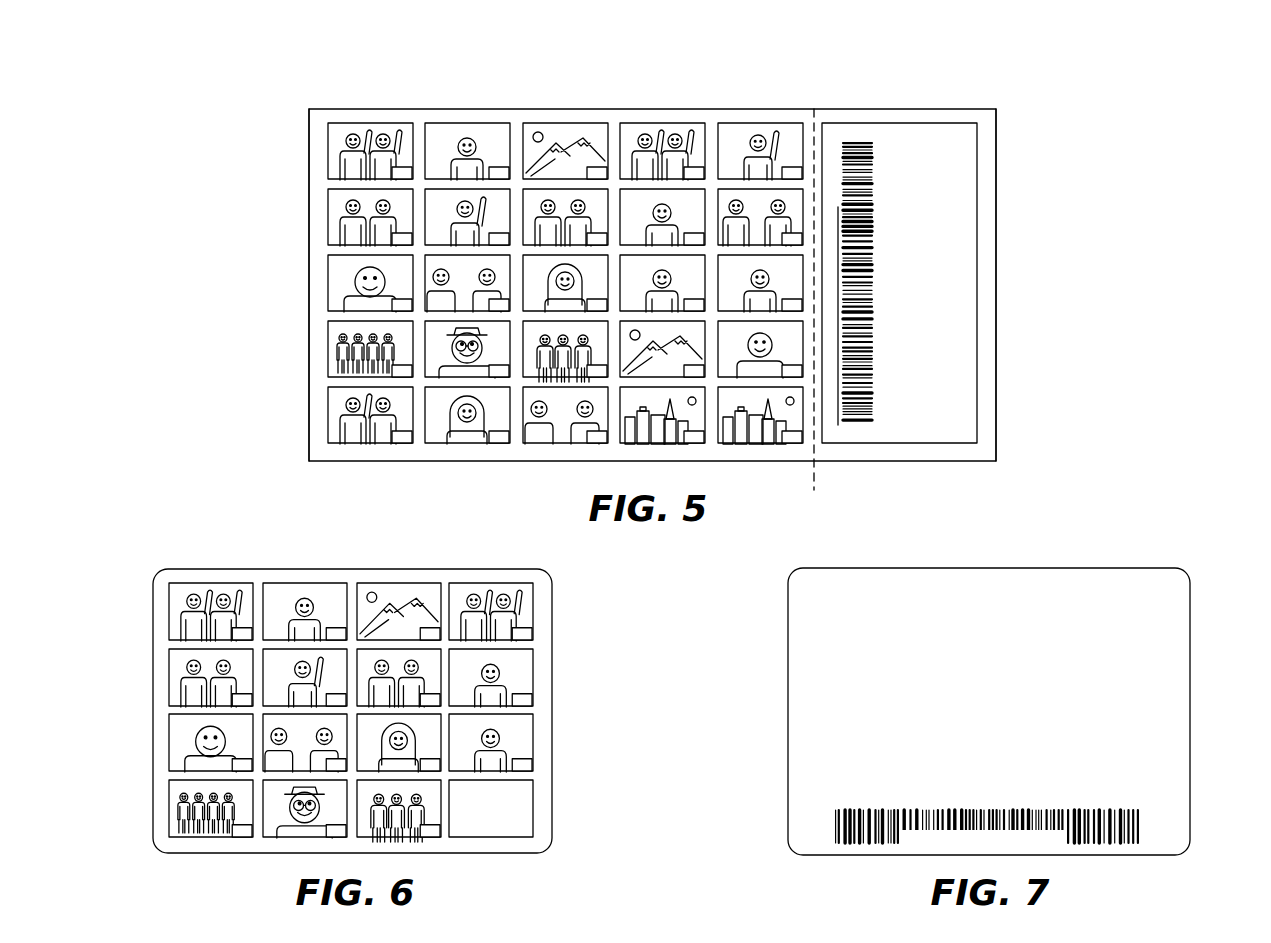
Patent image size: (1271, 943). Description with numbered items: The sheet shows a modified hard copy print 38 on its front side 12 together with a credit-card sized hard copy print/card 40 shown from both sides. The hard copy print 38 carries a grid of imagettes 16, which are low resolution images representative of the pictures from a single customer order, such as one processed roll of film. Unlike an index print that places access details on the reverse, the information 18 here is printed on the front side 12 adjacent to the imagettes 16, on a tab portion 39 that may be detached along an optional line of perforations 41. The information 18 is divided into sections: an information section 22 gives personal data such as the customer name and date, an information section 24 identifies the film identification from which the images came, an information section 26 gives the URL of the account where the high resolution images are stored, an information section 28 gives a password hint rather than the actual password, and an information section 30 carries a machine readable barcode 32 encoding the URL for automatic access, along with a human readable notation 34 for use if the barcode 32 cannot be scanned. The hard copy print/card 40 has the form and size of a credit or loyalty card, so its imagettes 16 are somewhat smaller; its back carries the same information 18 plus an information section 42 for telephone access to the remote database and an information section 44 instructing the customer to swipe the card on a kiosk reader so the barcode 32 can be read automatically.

In FIG. 5, the front side 12 is at (985, 128).
In FIG. 5, the imagettes 16 is at (630, 137).
In FIG. 5, the information 18 is at (966, 383).
In FIG. 5, the information section 22 is at (933, 103).
In FIG. 5, the information section 24 is at (923, 140).
In FIG. 5, the information section 26 is at (898, 140).
In FIG. 5, the information section 28 is at (878, 140).
In FIG. 5, the information section 30 is at (851, 432).
In FIG. 5, the machine readable barcode 32 is at (860, 430).
In FIG. 5, the human readable notation 34 is at (840, 206).
In FIG. 5, the hard copy print 38 is at (307, 436).
In FIG. 5, the tab portion 39 is at (985, 231).
In FIG. 6, the hard copy print/card 40 is at (556, 645).
In FIG. 7, the hard copy print/card 40 is at (1195, 648).
In FIG. 5, the line of perforations 41 is at (812, 493).
In FIG. 7, the information section 42 is at (1075, 583).
In FIG. 7, the information section 44 is at (815, 785).